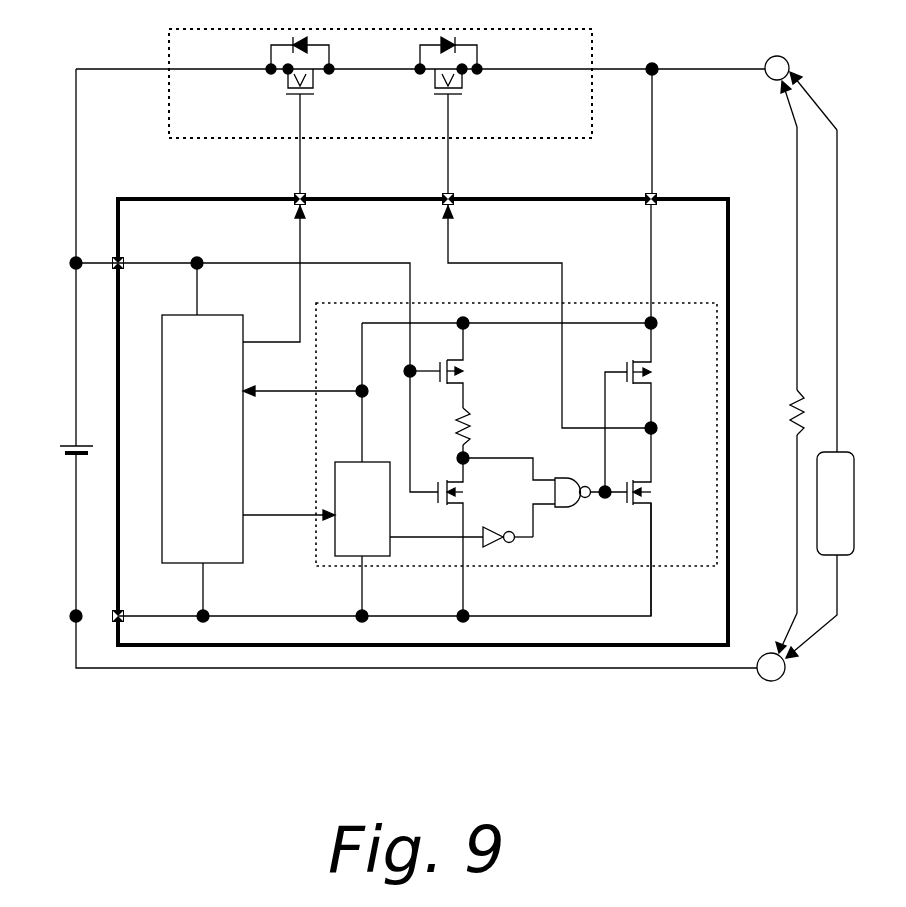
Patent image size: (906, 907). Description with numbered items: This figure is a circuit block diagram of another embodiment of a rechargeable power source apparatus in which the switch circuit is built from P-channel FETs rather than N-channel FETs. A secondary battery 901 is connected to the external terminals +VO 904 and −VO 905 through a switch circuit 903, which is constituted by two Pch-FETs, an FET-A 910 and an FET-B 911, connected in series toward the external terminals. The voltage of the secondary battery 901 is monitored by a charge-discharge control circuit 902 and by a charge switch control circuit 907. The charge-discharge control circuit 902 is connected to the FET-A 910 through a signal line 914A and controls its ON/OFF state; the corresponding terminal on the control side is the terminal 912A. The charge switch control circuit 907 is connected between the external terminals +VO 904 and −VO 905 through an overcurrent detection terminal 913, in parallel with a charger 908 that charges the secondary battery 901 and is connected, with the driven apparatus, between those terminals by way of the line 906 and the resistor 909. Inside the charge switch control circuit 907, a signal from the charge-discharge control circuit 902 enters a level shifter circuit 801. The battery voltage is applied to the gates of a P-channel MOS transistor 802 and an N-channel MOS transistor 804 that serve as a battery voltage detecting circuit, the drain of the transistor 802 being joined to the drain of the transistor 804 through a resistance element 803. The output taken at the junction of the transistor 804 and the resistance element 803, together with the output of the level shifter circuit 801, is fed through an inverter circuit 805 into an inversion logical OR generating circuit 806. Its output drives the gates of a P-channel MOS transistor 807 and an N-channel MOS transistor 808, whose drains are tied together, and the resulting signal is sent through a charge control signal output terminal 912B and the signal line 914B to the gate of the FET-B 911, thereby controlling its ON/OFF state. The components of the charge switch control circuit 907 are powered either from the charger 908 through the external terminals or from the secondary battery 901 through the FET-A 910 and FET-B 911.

The level shifter circuit 801 is at (350, 548).
The P-channel MOS transistor 802 is at (465, 378).
The resistance element 803 is at (470, 428).
The N-channel MOS transistor 804 is at (463, 497).
The inverter circuit 805 is at (495, 545).
The inversion logical OR generating circuit 806 is at (578, 506).
The P-channel MOS transistor 807 is at (655, 380).
The N-channel MOS transistor 808 is at (685, 485).
The secondary battery 901 is at (55, 457).
The charge-discharge control circuit 902 is at (162, 507).
The switch circuit 903 is at (170, 50).
The external terminal +VO 904 is at (770, 58).
The external terminal −VO 905 is at (766, 684).
The wiring line 906 is at (655, 110).
The charge switch control circuit 907 is at (625, 570).
The charger 908 is at (810, 522).
The load resistor 909 is at (779, 410).
The FET-A 910 is at (280, 85).
The FET-B 911 is at (480, 84).
The terminal 912A is at (310, 213).
The charge control signal output terminal 912B is at (458, 213).
The overcurrent detection terminal 913 is at (655, 205).
The signal line 914A is at (306, 165).
The signal line 914B is at (453, 165).